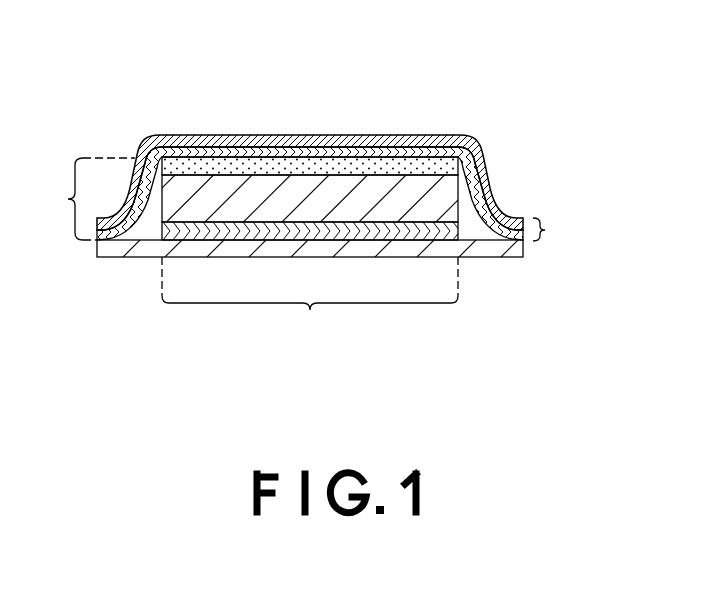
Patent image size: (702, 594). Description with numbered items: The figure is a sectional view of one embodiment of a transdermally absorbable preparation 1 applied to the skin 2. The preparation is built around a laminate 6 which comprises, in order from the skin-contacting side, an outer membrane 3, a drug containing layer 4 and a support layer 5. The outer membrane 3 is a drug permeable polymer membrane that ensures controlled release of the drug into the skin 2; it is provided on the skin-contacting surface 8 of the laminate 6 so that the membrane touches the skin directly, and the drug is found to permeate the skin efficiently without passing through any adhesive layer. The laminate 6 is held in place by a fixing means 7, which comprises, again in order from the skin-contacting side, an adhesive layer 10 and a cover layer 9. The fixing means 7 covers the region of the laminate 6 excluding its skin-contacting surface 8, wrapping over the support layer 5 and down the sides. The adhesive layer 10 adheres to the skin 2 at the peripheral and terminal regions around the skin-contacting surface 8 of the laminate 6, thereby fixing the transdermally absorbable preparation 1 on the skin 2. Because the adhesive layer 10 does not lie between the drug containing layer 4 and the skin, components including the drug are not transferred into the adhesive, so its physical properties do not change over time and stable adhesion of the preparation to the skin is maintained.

The transdermally absorbable preparation 1 is at (285, 163).
The skin 2 is at (217, 252).
The outer membrane 3 is at (385, 232).
The drug containing layer 4 is at (413, 200).
The support layer 5 is at (305, 165).
The laminate 6 is at (91, 199).
The fixing means 7 is at (547, 230).
The skin-contacting surface 8 is at (310, 298).
The cover layer 9 is at (134, 99).
The adhesive layer 10 is at (253, 152).